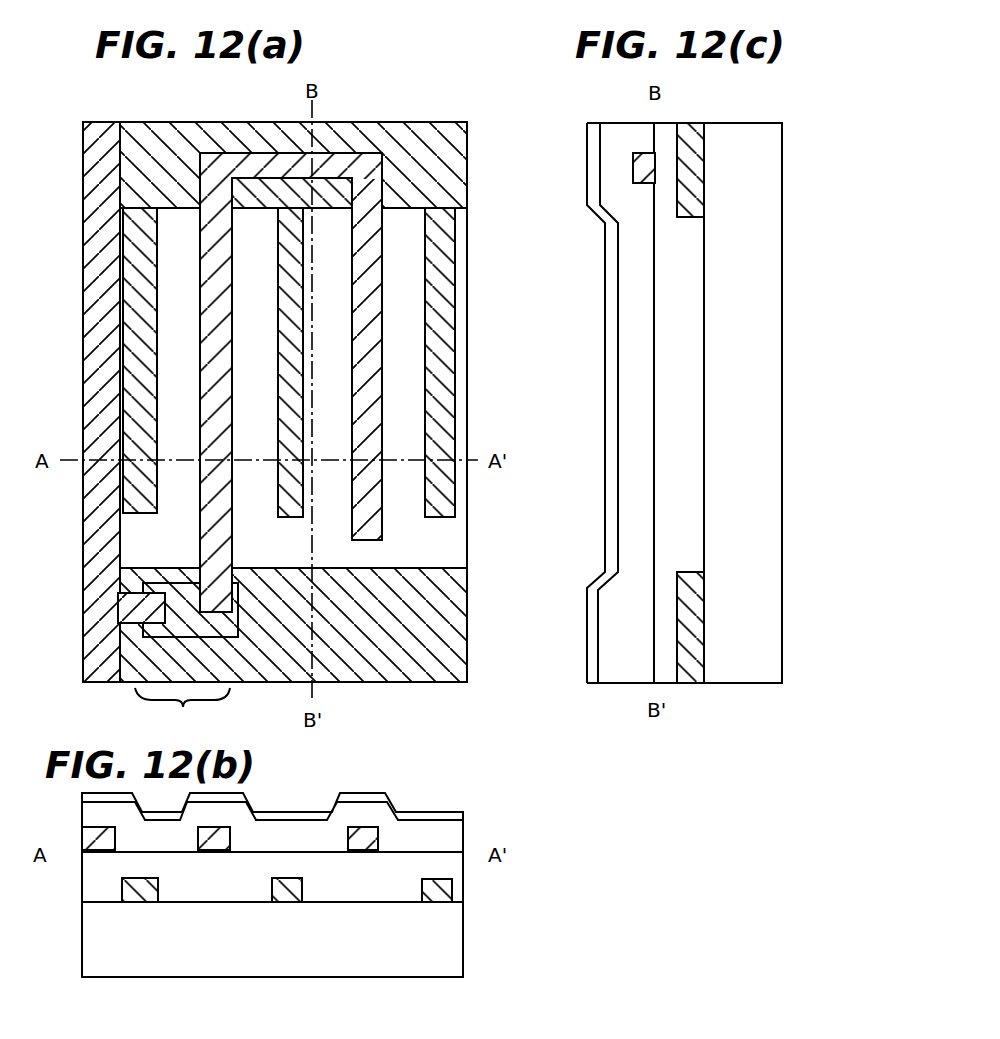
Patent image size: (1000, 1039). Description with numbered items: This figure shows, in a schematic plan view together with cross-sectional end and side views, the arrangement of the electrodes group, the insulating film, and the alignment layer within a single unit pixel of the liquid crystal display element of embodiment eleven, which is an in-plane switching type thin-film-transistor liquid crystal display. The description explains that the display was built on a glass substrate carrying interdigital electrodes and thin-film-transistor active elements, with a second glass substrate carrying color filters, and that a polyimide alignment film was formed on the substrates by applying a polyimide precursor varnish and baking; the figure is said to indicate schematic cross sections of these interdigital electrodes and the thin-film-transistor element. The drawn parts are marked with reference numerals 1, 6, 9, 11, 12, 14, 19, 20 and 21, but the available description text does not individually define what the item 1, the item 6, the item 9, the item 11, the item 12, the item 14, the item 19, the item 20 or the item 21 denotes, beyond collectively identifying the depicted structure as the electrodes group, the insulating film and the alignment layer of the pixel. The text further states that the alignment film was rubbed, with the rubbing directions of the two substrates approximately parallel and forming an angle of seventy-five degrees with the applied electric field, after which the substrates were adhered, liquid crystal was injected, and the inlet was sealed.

In FIG. 12B, the substrate 1 is at (437, 952).
In FIG. 12C, the substrate 1 is at (747, 667).
In FIG. 12B, the protective film 6 is at (442, 818).
In FIG. 12C, the protective film 6 is at (587, 670).
In FIG. 12B, the insulating film 9 is at (95, 888).
In FIG. 12C, the insulating film 9 is at (677, 278).
In FIG. 12A, the lower electrode 11 is at (130, 150).
In FIG. 12B, the lower electrode 11 is at (420, 903).
In FIG. 12A, the lower electrode pad 12 is at (438, 595).
In FIG. 12C, the lower electrode pad 12 is at (687, 590).
In FIG. 12A, the contact hole 14 is at (165, 568).
In FIG. 12A, the upper electrode lead 19 is at (102, 258).
In FIG. 12A, the upper electrode 20 is at (205, 338).
In FIG. 12B, the upper electrode 20 is at (217, 826).
In FIG. 12C, the upper electrode 20 is at (640, 170).
In FIG. 12A, the contact region 21 is at (182, 712).